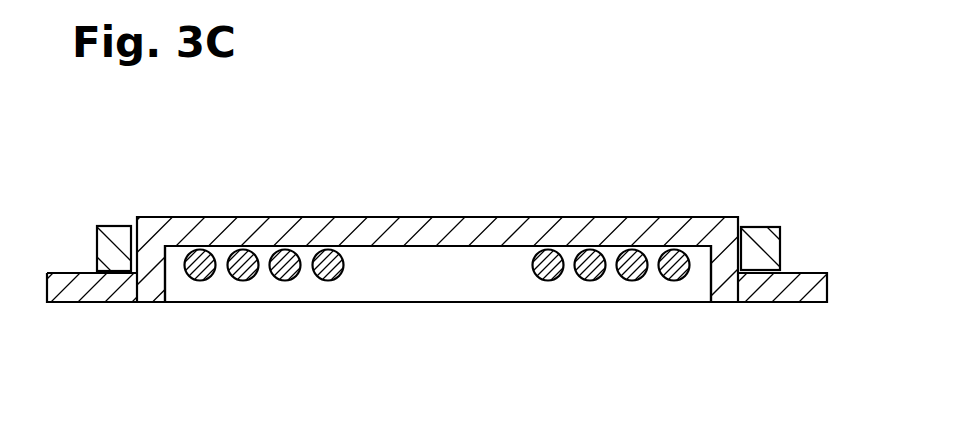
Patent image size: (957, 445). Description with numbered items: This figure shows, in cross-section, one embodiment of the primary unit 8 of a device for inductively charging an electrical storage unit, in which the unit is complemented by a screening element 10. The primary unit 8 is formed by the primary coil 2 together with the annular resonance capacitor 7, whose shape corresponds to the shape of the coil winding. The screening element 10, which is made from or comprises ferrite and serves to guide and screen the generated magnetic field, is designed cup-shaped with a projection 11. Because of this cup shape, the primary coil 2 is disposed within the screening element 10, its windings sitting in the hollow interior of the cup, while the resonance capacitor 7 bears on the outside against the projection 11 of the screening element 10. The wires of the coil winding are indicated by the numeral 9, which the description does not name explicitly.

The primary coil 2 is at (610, 284).
The resonance capacitor 7 is at (768, 249).
The primary unit 8 is at (673, 216).
The conductor / wire 9 is at (545, 273).
The screening element 10 is at (535, 227).
The projection 11 is at (760, 286).